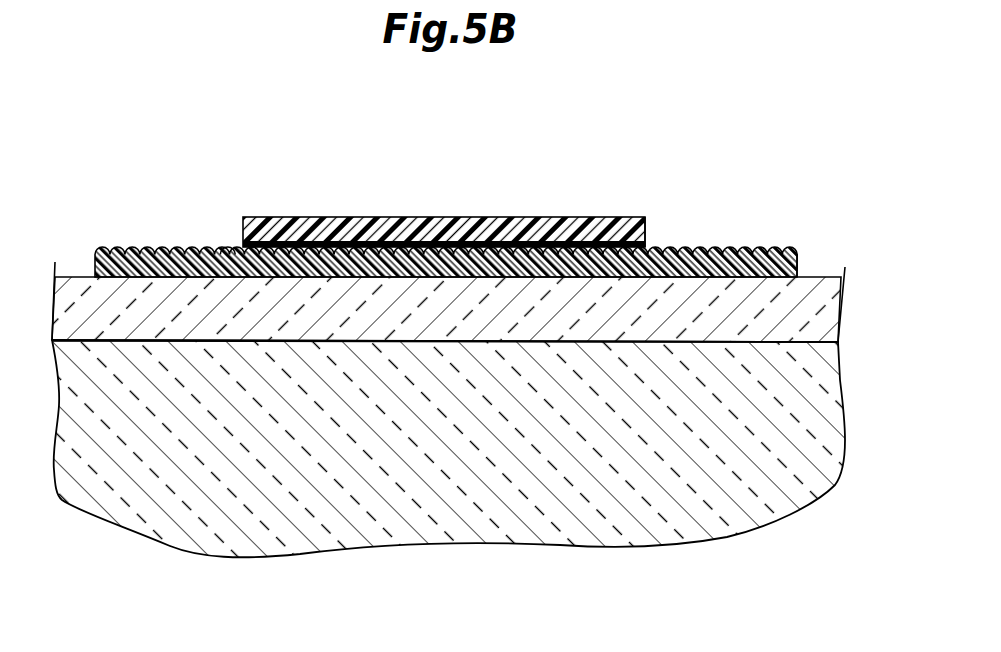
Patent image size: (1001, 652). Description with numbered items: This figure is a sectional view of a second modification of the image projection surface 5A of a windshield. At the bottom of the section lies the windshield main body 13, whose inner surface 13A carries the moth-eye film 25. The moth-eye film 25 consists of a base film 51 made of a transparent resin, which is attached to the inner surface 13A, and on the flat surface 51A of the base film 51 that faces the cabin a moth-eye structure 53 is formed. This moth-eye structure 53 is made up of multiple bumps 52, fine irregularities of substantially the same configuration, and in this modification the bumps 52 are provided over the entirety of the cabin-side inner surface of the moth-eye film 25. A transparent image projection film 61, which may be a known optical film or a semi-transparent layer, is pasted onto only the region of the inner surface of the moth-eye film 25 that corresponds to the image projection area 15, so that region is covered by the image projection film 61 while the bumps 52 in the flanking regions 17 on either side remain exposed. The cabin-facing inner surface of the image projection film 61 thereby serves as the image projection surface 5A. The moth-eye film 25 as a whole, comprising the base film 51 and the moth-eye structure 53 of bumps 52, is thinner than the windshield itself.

The image projection surface 5A is at (513, 217).
The windshield main body 13 is at (203, 535).
The inner surface 13A is at (80, 340).
The image projection area 15 is at (243, 153).
The uncoated region 17 is at (95, 153).
The moth-eye film 25 is at (491, 255).
The base film 51 is at (852, 312).
The flat surface 51A is at (228, 250).
The bumps 52 is at (740, 250).
The moth-eye structure 53 is at (828, 233).
The image projection film 61 is at (656, 222).